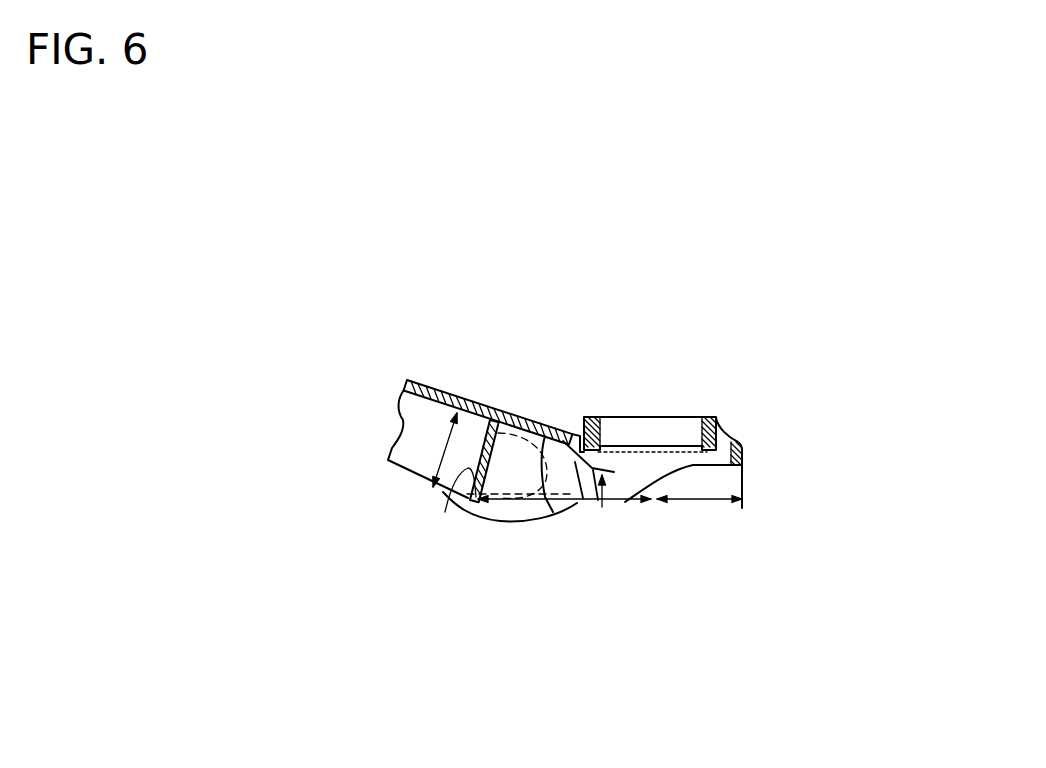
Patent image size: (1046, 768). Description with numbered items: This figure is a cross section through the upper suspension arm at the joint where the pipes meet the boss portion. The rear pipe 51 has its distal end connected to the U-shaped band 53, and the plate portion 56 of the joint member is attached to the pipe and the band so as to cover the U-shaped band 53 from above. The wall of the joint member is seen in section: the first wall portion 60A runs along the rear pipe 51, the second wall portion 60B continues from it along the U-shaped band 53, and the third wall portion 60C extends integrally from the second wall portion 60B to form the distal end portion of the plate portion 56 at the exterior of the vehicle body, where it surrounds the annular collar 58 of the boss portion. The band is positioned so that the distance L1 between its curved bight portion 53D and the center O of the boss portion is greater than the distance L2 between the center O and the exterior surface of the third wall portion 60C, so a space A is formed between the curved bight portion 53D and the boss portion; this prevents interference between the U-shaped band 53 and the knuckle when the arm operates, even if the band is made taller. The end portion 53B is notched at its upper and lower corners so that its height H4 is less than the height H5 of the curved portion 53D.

The rear pipe 51 is at (432, 477).
The U-shaped band 53 is at (513, 512).
The end portion of the U-shaped band 53B is at (580, 504).
The curved bight portion of the U-shaped band 53D is at (447, 508).
The plate portion 56 is at (485, 409).
The annular collar 58 is at (718, 417).
The first wall portion 60A is at (478, 448).
The second wall portion 60B is at (610, 495).
The third wall portion 60C is at (742, 458).
The height of the curved portion H5 is at (450, 442).
The height of the end portion H4 is at (606, 488).
The distance between the curved bight portion and the center of the boss portion L1 is at (569, 432).
The distance between the center of the boss portion and the exterior surface of the L2 is at (703, 502).
The center of the boss portion O is at (653, 562).
The space A is at (540, 518).